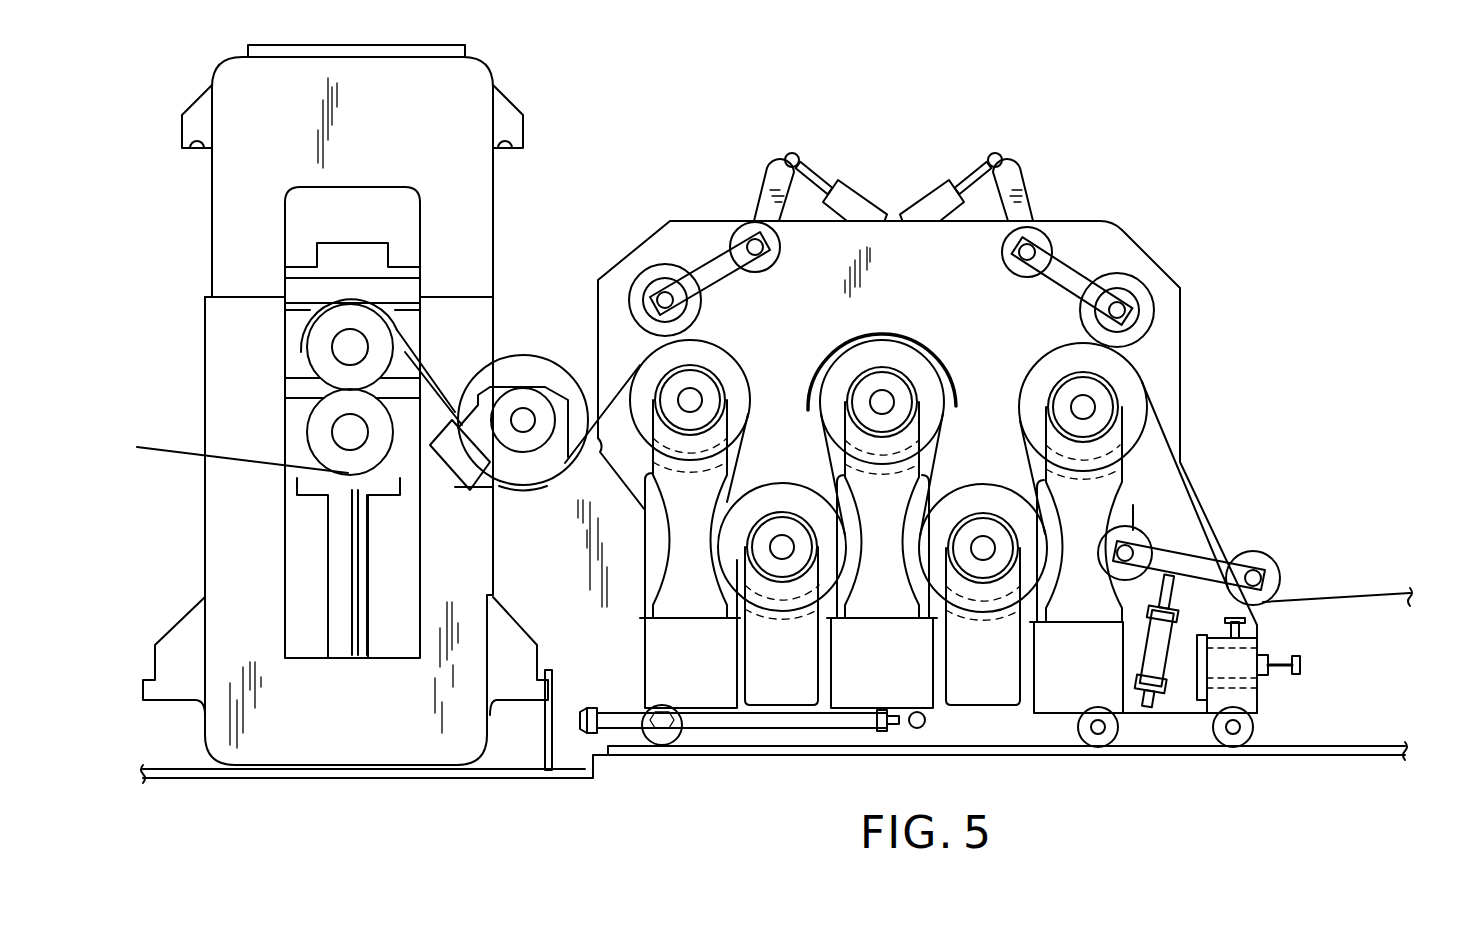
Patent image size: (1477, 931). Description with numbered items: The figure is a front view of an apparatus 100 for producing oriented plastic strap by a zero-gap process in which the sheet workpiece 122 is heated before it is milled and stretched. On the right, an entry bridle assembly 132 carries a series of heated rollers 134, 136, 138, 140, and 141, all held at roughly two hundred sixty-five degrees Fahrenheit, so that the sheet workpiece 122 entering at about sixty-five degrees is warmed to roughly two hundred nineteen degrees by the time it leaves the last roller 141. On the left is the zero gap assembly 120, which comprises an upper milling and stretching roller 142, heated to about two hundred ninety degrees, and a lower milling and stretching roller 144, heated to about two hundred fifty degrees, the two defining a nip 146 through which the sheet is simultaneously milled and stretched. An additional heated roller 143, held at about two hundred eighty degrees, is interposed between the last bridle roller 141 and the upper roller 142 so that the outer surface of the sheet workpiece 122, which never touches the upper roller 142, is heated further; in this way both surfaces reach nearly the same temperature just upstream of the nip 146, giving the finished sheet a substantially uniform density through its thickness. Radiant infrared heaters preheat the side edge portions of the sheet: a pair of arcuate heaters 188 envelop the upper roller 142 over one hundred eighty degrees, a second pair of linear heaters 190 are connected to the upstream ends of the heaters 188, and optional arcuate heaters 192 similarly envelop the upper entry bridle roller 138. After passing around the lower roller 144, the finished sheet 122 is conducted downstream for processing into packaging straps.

The apparatus 100 is at (905, 155).
The zero gap assembly 120 is at (252, 358).
The sheet workpiece 122 is at (165, 448).
The entry bridle assembly 132 is at (1155, 370).
The roller 134 is at (1130, 425).
The roller 136 is at (995, 598).
The roller 138 is at (928, 432).
The roller 140 is at (790, 598).
The roller 141 is at (730, 365).
The upper milling and stretching roller 142 is at (332, 368).
The additional heated roller 143 is at (512, 365).
The lower milling and stretching roller 144 is at (320, 440).
The nip 146 is at (380, 388).
The heaters 188 is at (325, 298).
The heaters 190 is at (418, 340).
The heaters 192 is at (948, 355).